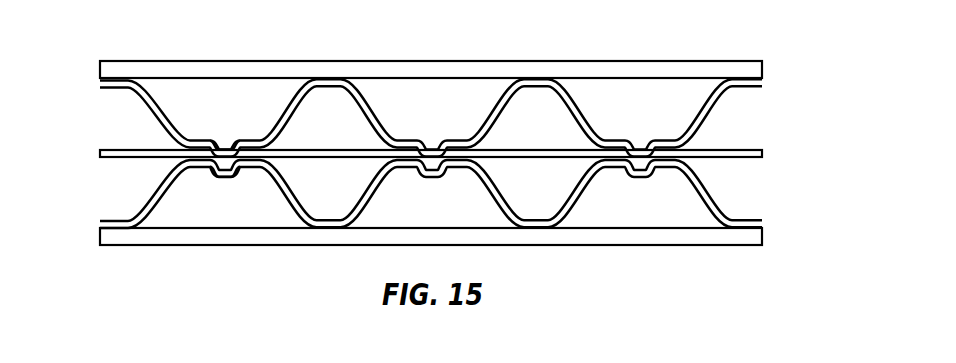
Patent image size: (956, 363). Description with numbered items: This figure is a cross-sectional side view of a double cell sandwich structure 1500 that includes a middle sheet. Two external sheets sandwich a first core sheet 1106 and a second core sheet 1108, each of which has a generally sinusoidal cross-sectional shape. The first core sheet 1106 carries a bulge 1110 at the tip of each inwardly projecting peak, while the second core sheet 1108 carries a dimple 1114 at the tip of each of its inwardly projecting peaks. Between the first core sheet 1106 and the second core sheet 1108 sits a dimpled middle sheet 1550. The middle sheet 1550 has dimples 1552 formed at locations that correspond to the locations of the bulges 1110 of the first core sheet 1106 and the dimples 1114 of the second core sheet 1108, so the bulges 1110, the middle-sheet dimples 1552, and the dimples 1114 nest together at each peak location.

The double cell sandwich structure 1500 is at (616, 39).
The first core sheet 1106 is at (722, 100).
The second core sheet 1108 is at (144, 216).
The dimpled middle sheet 1550 is at (125, 149).
The dimples 1552 is at (218, 160).
The bulge 1110 is at (222, 152).
The dimple 1114 is at (222, 175).